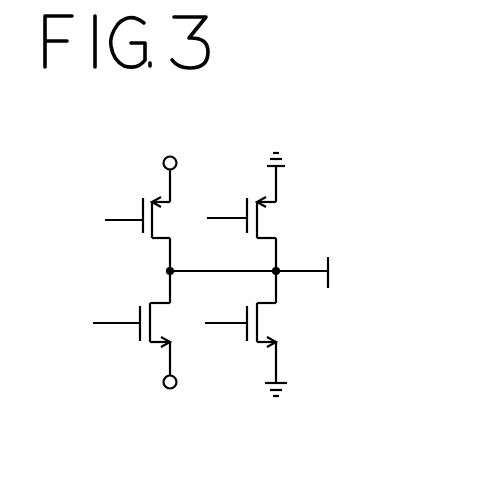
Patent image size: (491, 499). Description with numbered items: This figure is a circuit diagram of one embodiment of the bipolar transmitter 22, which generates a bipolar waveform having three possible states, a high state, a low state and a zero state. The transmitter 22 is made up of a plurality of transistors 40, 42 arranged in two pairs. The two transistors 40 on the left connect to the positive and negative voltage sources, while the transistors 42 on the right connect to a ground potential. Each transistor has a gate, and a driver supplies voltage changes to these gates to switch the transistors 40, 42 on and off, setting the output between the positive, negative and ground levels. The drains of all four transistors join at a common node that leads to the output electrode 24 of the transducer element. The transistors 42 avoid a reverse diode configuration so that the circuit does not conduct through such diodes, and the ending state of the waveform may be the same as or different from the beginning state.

The transmitter 22 is at (341, 135).
The electrode 24 is at (321, 258).
The transistors 40 is at (147, 198).
The transistors 42 is at (248, 194).